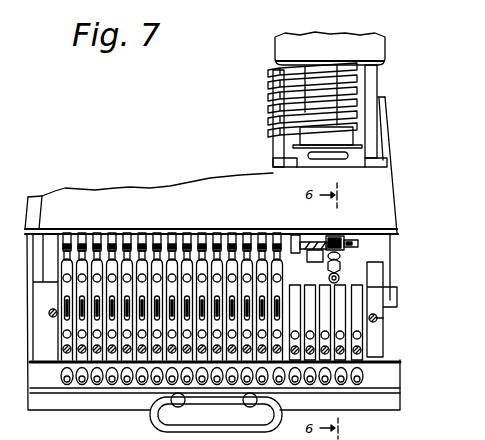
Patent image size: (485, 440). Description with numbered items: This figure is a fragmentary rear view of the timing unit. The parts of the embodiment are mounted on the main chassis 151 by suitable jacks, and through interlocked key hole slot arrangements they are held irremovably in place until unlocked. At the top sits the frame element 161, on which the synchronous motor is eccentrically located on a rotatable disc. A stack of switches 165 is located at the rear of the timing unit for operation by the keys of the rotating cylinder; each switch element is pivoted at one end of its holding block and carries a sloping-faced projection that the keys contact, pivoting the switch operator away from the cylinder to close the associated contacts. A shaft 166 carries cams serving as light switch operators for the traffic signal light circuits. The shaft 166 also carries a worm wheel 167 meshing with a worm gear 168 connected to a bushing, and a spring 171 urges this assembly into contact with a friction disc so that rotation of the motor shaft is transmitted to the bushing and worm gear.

The main chassis 151 is at (395, 188).
The frame element 161 is at (375, 48).
The stack of switches 165 is at (268, 89).
The shaft 166 is at (322, 243).
The worm wheel 167 is at (353, 245).
The worm gear 168 is at (350, 254).
The spring 171 is at (327, 258).